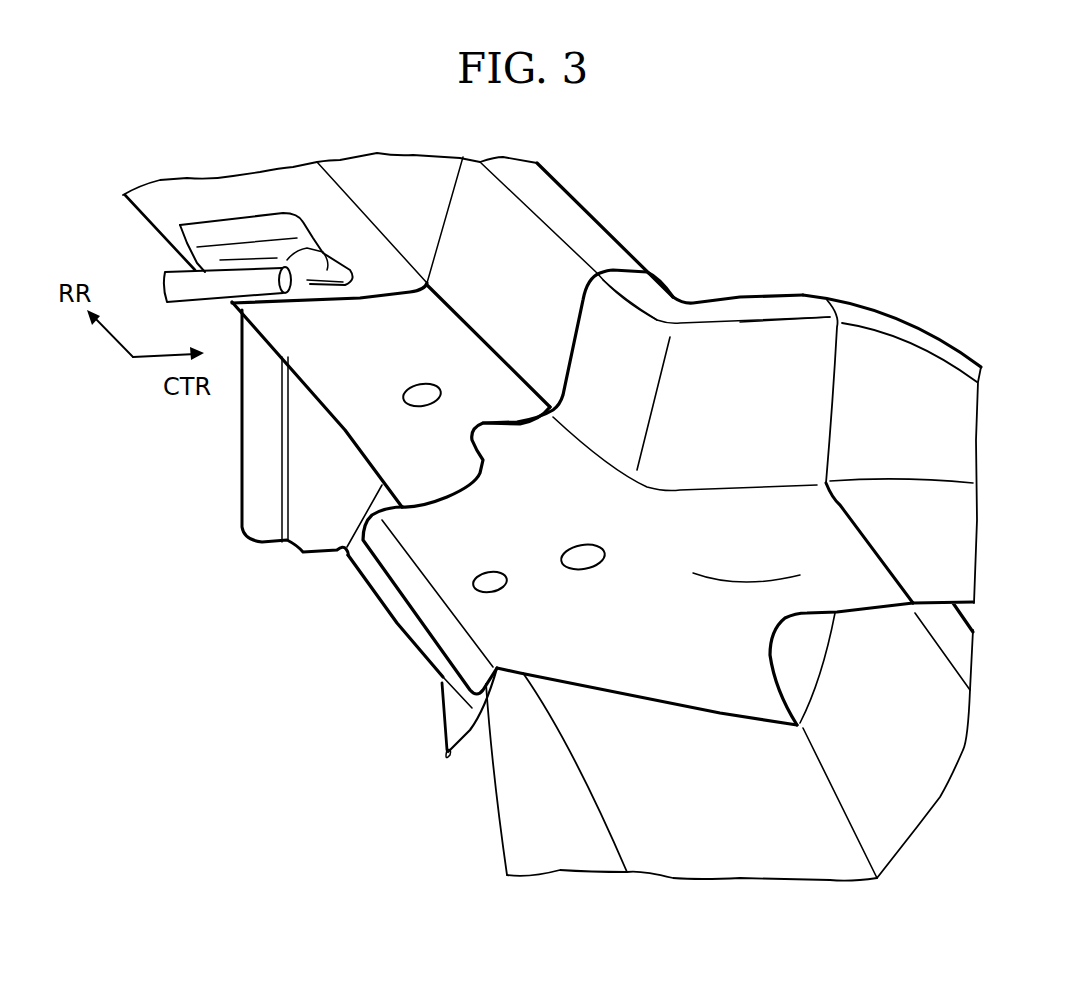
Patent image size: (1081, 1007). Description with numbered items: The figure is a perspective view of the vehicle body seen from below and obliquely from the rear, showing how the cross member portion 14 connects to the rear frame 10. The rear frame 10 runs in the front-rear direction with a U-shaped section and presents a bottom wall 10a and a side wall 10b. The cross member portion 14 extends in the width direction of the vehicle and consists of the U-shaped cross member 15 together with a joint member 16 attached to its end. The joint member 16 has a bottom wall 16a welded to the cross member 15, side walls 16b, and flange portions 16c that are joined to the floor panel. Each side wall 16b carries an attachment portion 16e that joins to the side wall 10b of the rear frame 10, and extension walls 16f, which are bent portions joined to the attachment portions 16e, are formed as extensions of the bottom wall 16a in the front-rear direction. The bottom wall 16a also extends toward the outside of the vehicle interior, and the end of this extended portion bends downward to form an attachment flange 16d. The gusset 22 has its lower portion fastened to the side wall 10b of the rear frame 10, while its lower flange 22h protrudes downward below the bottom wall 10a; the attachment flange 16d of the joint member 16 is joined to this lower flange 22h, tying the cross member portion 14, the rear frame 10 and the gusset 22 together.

The rear frame 10 is at (560, 160).
The bottom wall 10a is at (777, 807).
The side wall 10b is at (523, 247).
The cross member portion 14 is at (915, 315).
The cross member 15 is at (953, 343).
The joint member 16 is at (743, 285).
The bottom wall 16a is at (800, 575).
The side wall 16b is at (730, 410).
The flange portion 16c is at (773, 292).
The attachment flange 16d is at (418, 602).
The attachment portion 16e is at (617, 363).
The extension wall 16f is at (510, 442).
The gusset 22 is at (313, 488).
The lower flange 22h is at (347, 558).